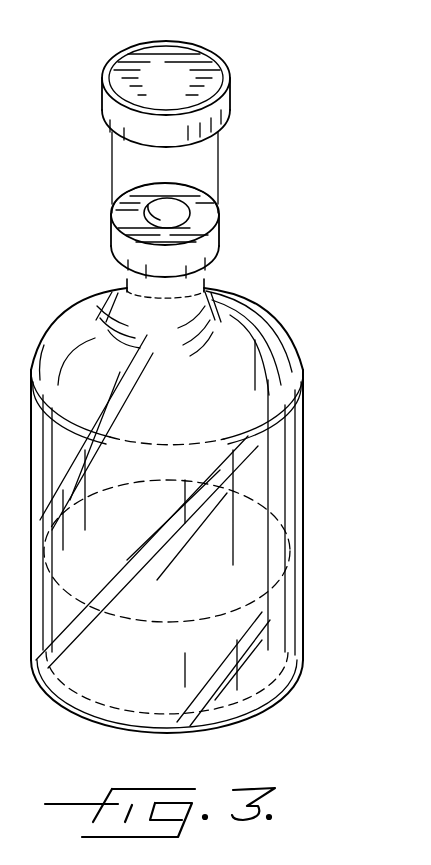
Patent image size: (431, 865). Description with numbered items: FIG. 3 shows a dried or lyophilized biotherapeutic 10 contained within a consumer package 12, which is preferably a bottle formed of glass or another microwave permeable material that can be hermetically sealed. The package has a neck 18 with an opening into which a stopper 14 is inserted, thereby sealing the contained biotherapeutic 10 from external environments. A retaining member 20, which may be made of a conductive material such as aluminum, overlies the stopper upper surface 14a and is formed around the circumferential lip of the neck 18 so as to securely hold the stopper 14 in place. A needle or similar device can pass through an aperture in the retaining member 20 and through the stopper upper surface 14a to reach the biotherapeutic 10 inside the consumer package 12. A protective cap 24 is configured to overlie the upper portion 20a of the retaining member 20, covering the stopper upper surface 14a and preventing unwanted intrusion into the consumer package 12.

The dried or lyophilized biotherapeutic 10 is at (297, 587).
The consumer package 12 is at (272, 296).
The stopper 14 is at (122, 284).
The stopper upper surface 14a is at (162, 218).
The neck 18 is at (224, 287).
The retaining member 20 is at (215, 222).
The upper portion of the retaining member 20a is at (217, 199).
The protective cap 24 is at (208, 58).